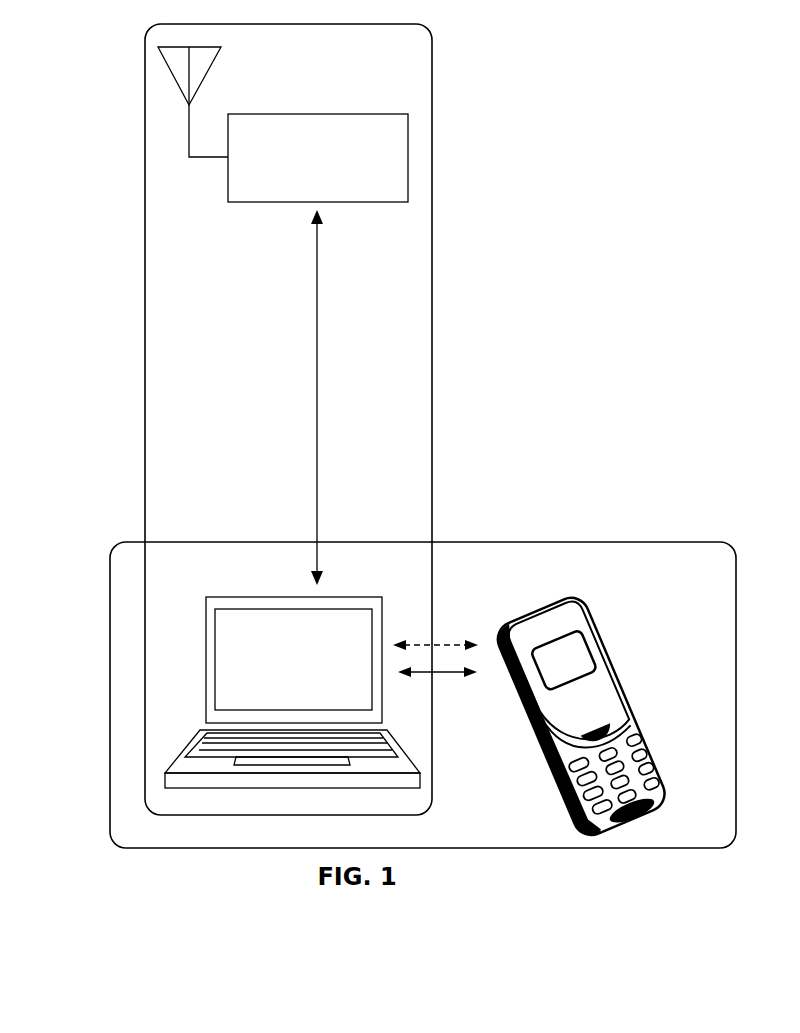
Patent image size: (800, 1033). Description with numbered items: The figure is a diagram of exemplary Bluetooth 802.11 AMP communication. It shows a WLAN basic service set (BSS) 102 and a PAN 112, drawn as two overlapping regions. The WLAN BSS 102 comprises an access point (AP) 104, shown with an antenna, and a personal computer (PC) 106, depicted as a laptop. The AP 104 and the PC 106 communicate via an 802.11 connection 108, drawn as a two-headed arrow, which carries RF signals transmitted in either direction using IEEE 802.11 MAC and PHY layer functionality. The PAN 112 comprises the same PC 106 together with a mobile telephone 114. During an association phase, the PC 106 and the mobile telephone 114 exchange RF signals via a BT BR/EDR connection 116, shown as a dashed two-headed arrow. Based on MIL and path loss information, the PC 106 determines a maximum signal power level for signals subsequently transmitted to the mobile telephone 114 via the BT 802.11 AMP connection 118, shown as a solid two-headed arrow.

The WLAN basic service set (BSS) 102 is at (145, 168).
The access point (AP) 104 is at (307, 114).
The personal computer (PC) 106 is at (233, 598).
The 802.11 connection 108 is at (317, 362).
The PAN 112 is at (703, 542).
The mobile telephone 114 is at (608, 645).
The BT BR/EDR connection 116 is at (443, 645).
The BT 802.11 AMP connection 118 is at (445, 675).